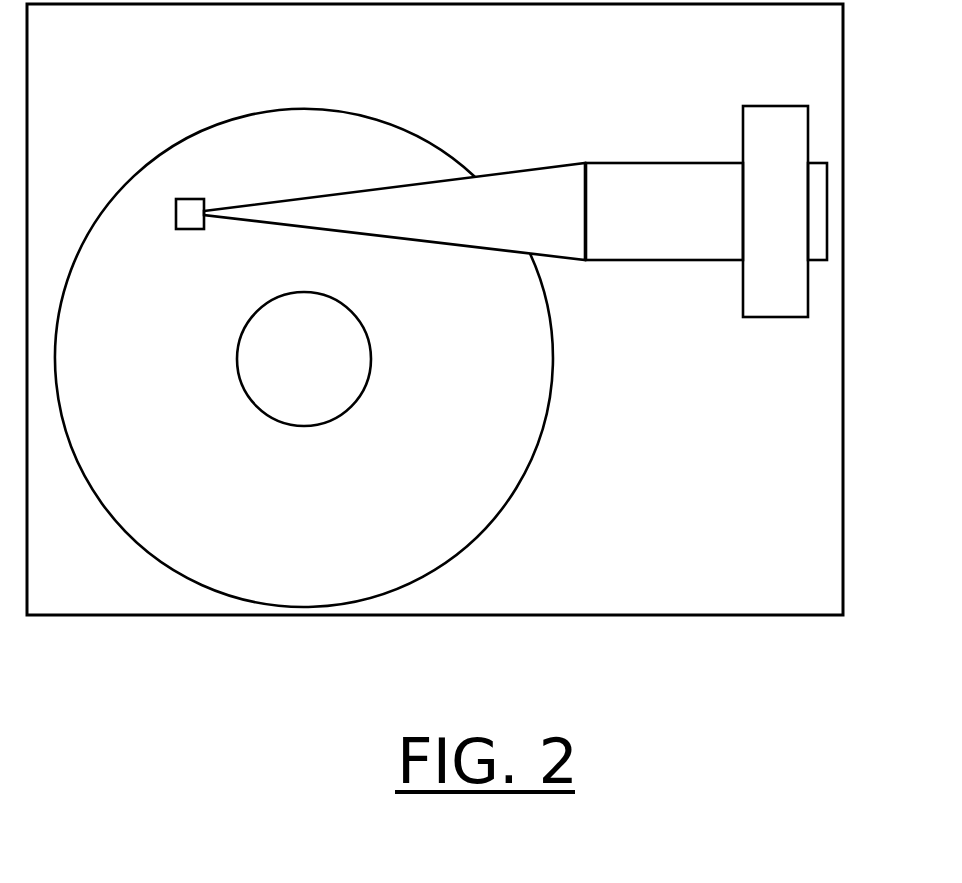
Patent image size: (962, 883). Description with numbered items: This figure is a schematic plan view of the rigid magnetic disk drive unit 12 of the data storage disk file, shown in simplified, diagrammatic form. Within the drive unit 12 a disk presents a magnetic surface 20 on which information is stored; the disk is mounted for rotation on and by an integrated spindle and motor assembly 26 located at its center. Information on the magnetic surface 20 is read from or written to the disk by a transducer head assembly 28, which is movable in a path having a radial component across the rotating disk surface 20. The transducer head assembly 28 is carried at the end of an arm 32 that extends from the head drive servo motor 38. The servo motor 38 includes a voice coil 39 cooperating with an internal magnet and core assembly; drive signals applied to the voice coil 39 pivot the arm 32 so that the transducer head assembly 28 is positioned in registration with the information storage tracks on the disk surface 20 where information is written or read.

The rigid magnetic disk drive unit 12 is at (727, 543).
The magnetic surface 20 is at (289, 547).
The integrated spindle and motor assembly 26 is at (304, 359).
The transducer head assembly 28 is at (190, 209).
The arm 32 is at (394, 211).
The head drive servo motor 38 is at (664, 211).
The voice coil 39 is at (785, 211).